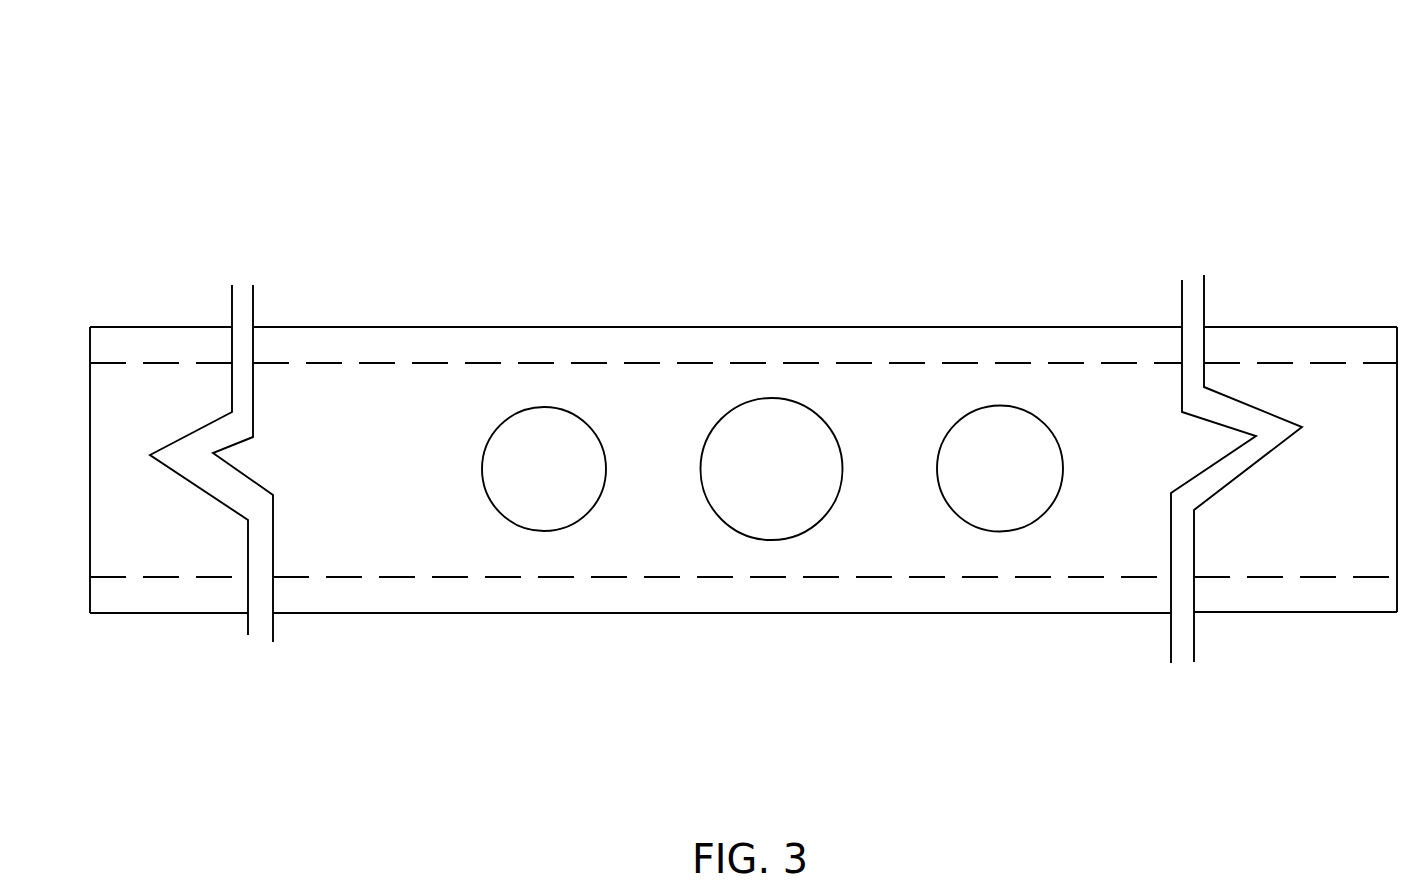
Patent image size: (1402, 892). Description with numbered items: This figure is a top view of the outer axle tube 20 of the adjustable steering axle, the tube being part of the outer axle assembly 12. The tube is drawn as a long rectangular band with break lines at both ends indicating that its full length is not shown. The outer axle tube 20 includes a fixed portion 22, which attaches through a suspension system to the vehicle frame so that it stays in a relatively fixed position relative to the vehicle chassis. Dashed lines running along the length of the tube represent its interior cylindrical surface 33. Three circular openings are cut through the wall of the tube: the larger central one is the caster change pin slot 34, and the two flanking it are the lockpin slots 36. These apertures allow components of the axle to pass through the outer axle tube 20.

The outer axle assembly 12 is at (1062, 247).
The outer axle tube 20 is at (659, 342).
The fixed portion 22 is at (693, 625).
The interior cylindrical surface 33 is at (449, 576).
The caster change pin slot 34 is at (772, 397).
The lockpin slots 36 is at (525, 407).